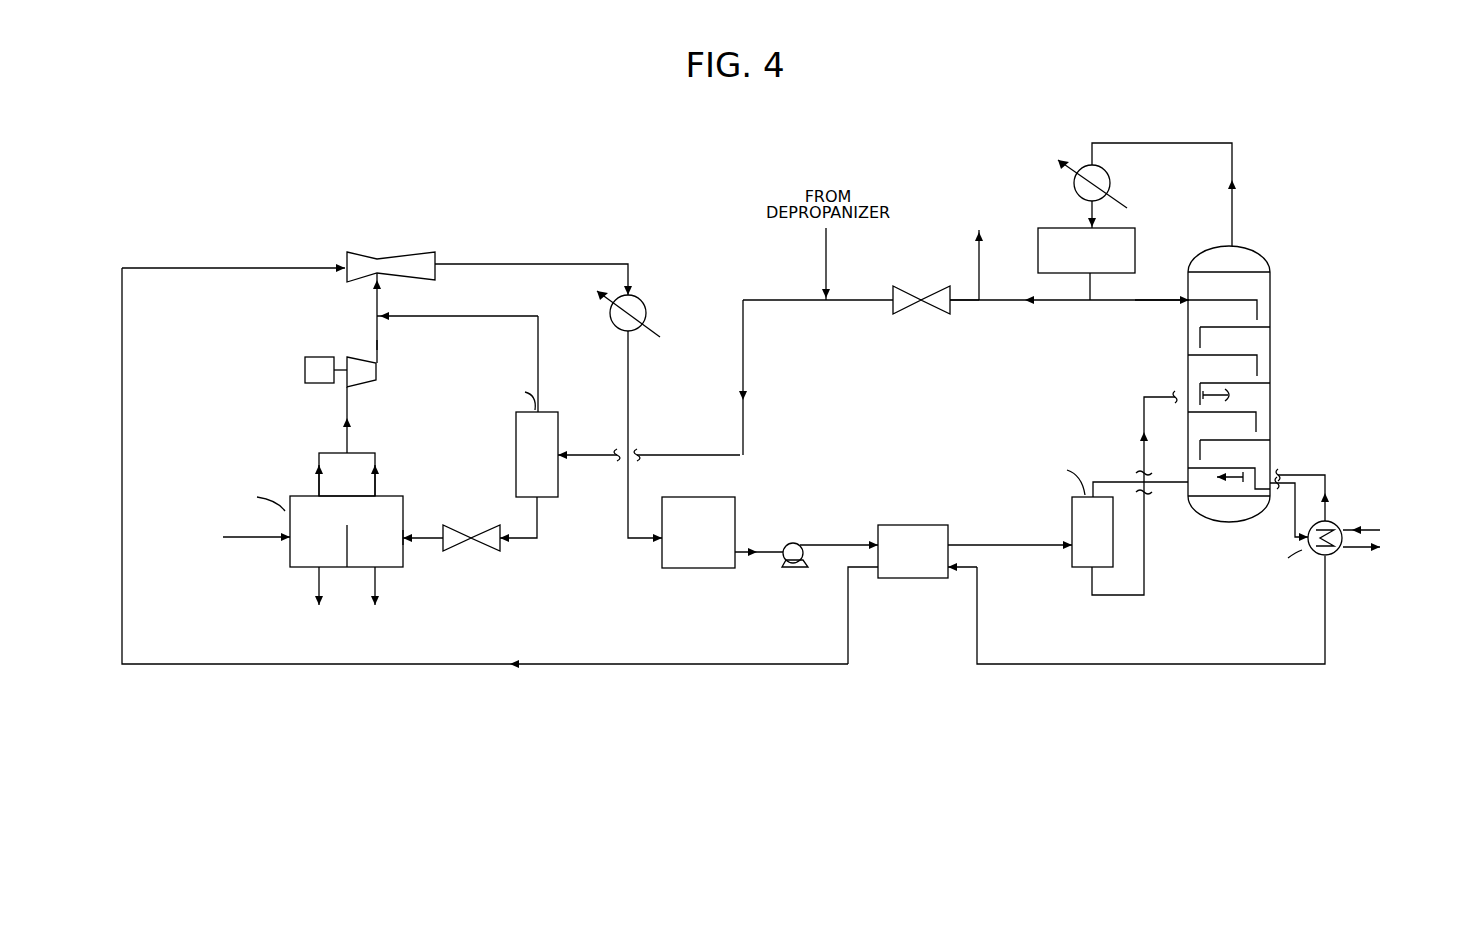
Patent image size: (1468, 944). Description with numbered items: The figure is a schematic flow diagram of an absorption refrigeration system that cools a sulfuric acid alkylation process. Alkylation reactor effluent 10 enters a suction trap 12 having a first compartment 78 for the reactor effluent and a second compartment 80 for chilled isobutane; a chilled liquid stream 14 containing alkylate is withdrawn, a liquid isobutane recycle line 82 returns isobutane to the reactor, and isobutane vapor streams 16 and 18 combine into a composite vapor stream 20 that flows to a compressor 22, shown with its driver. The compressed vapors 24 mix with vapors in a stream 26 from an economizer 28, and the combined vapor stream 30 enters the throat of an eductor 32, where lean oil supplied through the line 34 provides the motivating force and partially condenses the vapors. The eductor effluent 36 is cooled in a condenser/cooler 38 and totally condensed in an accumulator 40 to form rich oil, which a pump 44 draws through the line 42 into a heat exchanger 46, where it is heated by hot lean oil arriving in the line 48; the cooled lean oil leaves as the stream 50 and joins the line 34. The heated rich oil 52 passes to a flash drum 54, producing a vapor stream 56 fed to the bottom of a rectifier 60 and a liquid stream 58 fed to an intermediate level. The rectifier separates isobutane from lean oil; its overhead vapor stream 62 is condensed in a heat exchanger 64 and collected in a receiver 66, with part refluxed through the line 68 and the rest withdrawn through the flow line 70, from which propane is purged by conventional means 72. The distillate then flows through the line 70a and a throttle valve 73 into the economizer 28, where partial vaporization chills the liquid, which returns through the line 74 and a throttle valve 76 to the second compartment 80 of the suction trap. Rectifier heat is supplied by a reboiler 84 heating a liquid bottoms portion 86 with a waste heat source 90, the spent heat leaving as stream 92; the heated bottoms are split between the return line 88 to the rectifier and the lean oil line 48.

The alkylation reactor effluent 10 is at (249, 538).
The suction trap 12 is at (289, 570).
The chilled liquid stream 14 is at (310, 591).
The vapor stream 16 is at (318, 462).
The vapor stream 18 is at (377, 466).
The composite vapor stream 20 is at (350, 403).
The compressor 22 is at (380, 372).
The compressed isobutane vapors 24 is at (382, 338).
The economizer vapor stream 26 is at (433, 316).
The economizer 28 is at (516, 434).
The combined vapor stream 30 is at (375, 292).
The eductor 32 is at (348, 253).
The lean oil line 34 is at (223, 264).
The eductor effluent 36 is at (555, 264).
The condenser/cooler 38 is at (646, 310).
The accumulator 40 is at (738, 518).
The rich oil line 42 is at (751, 552).
The pump 44 is at (791, 541).
The heat exchanger 46 is at (930, 580).
The lean oil line 48 is at (978, 620).
The cooled lean oil stream 50 is at (849, 640).
The heated rich oil 52 is at (1021, 540).
The flash drum 54 is at (1072, 508).
The vapor stream 56 is at (1116, 480).
The liquid stream 58 is at (1143, 596).
The rectifier 60 is at (1272, 373).
The overhead vapor stream 62 is at (1235, 163).
The heat exchanger 64 is at (1110, 172).
The receiver 66 is at (1135, 248).
The reflux line 68 is at (1164, 304).
The distillate flow line 70 is at (1045, 303).
The distillate line 70a is at (970, 302).
The propane purge 72 is at (982, 288).
The throttle valve 73 is at (893, 314).
The chilled liquid line 74 is at (537, 540).
The throttle valve 76 is at (503, 549).
The first compartment 78 is at (328, 546).
The second compartment 80 is at (384, 539).
The isobutane recycle line 82 is at (380, 595).
The reboiler 84 is at (1313, 560).
The liquid bottoms portion 86 is at (1292, 505).
The reboiler return line 88 is at (1326, 483).
The heat source 90 is at (1370, 527).
The spent heat source 92 is at (1360, 548).